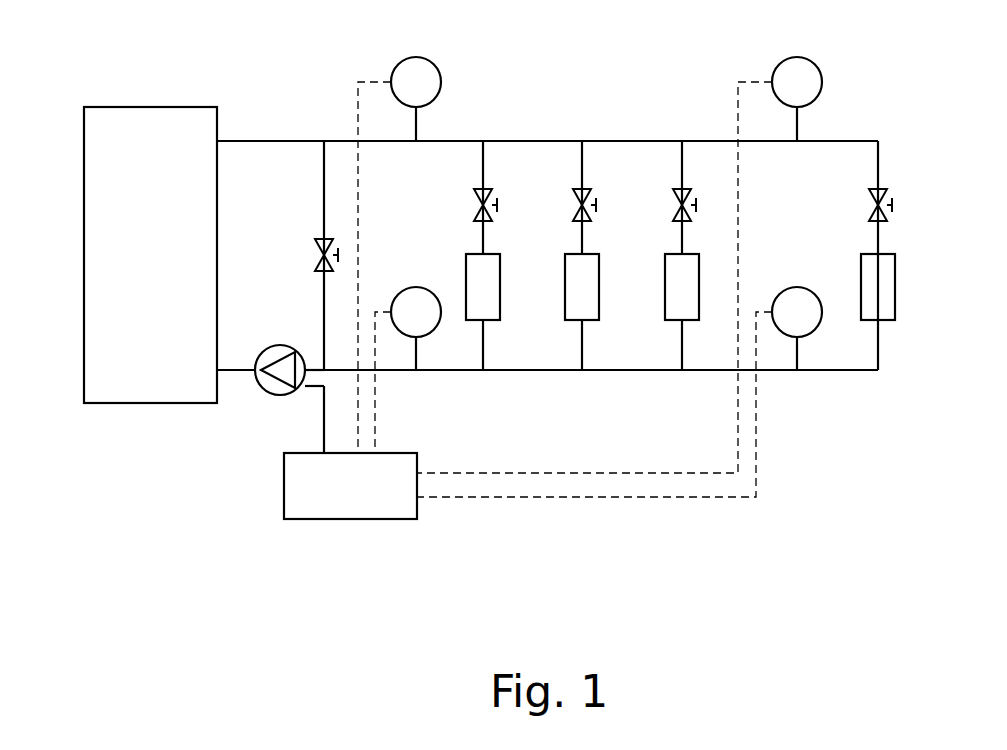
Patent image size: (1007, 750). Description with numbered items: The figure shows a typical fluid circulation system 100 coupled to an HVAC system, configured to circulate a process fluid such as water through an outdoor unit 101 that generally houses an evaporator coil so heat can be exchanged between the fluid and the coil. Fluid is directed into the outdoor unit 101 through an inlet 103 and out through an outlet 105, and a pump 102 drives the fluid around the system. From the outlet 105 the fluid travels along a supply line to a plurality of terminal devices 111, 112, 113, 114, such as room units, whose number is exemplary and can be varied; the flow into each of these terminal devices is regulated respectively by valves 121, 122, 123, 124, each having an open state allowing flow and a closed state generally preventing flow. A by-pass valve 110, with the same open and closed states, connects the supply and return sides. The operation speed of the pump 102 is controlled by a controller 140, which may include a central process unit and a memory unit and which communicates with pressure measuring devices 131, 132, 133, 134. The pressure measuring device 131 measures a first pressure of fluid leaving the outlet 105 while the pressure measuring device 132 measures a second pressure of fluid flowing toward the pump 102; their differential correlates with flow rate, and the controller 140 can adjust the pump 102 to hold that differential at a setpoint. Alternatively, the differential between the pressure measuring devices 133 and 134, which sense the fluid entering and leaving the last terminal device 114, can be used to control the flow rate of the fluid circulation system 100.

The fluid circulation system 100 is at (530, 141).
The outdoor unit 101 is at (112, 107).
The pump 102 is at (278, 398).
The inlet 103 is at (233, 375).
The outlet 105 is at (232, 141).
The by-pass valve 110 is at (320, 240).
The terminal device 111 is at (492, 320).
The terminal device 112 is at (591, 320).
The terminal device 113 is at (691, 320).
The last terminal device 114 is at (895, 268).
The valve 121 is at (478, 190).
The valve 122 is at (577, 190).
The valve 123 is at (677, 190).
The valve 124 is at (883, 190).
The pressure measuring device 131 is at (396, 58).
The pressure measuring device 132 is at (435, 290).
The pressure measuring device 133 is at (810, 58).
The pressure measuring device 134 is at (818, 290).
The controller 140 is at (308, 520).